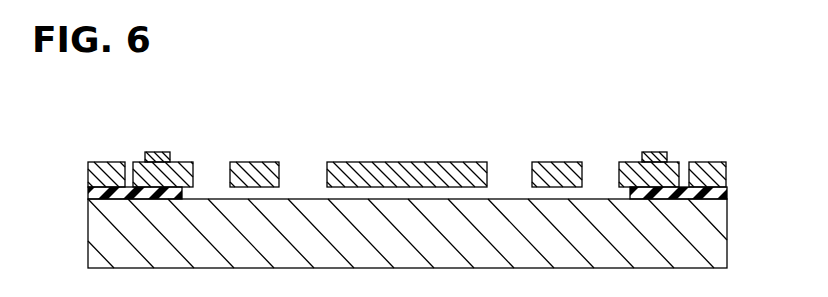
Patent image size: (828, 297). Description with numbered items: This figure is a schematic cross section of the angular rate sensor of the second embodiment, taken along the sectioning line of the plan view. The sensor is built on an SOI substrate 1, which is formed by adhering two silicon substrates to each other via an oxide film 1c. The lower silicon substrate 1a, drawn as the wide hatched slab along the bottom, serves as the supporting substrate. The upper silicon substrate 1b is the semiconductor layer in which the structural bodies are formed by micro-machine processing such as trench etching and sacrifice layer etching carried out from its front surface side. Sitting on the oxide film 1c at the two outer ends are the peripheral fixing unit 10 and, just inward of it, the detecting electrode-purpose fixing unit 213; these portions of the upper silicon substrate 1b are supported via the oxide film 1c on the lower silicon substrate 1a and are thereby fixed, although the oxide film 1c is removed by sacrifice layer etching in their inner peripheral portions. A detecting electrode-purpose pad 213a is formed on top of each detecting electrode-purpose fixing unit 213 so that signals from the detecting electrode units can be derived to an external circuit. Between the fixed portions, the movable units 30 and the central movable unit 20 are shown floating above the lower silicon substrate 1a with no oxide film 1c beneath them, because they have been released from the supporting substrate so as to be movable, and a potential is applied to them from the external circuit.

The SOI substrate 1 is at (442, 214).
The silicon substrate 1a is at (715, 228).
The silicon substrate 1b is at (734, 173).
The oxide film 1c is at (717, 191).
The peripheral fixing unit 10 is at (110, 163).
The movable unit 20 is at (402, 163).
The movable unit 30 is at (255, 163).
The detecting electrode-purpose fixing unit 213 is at (137, 163).
The detecting electrode-purpose pad 213a is at (158, 153).